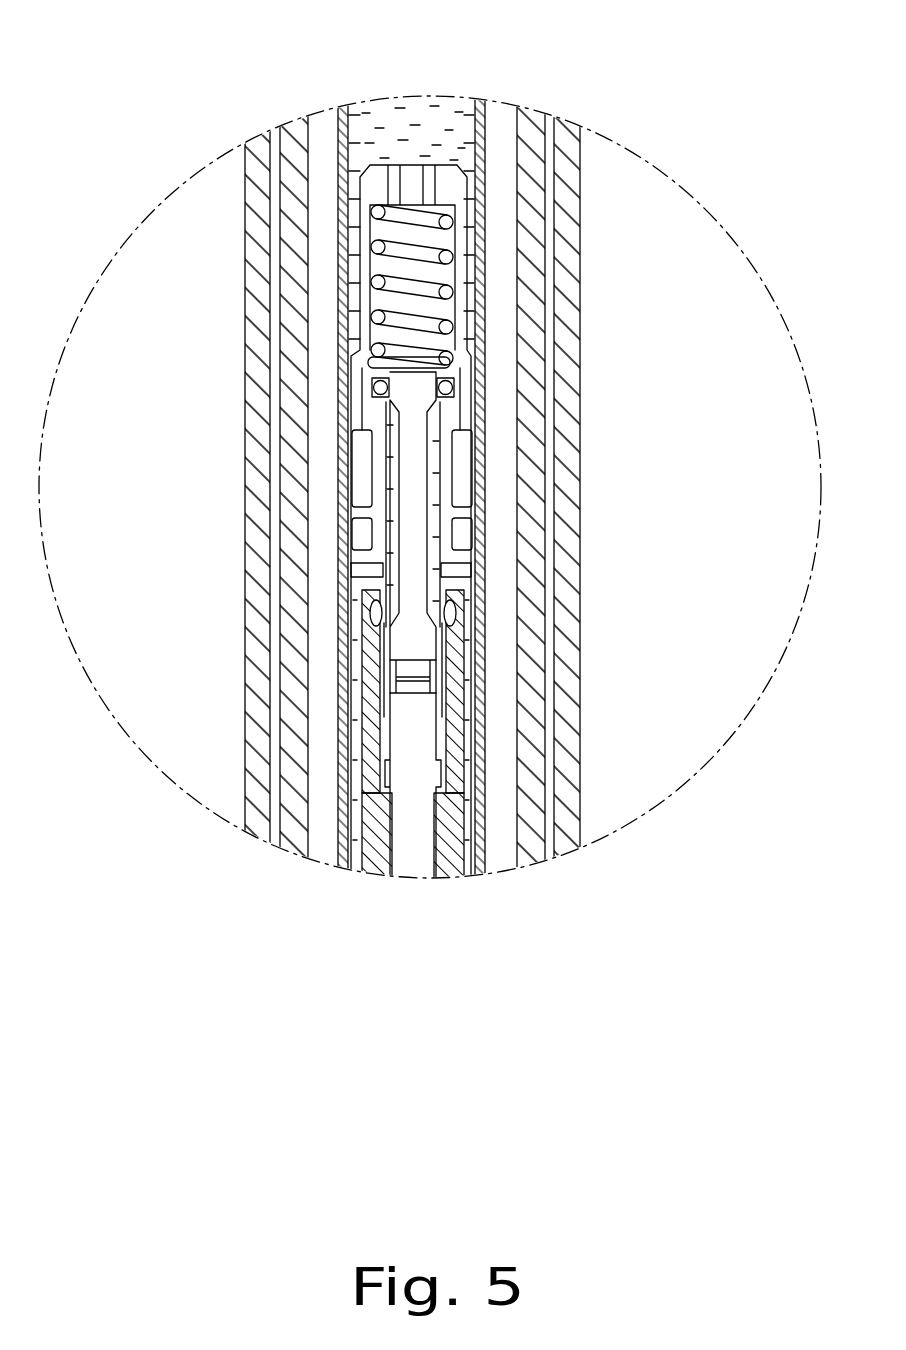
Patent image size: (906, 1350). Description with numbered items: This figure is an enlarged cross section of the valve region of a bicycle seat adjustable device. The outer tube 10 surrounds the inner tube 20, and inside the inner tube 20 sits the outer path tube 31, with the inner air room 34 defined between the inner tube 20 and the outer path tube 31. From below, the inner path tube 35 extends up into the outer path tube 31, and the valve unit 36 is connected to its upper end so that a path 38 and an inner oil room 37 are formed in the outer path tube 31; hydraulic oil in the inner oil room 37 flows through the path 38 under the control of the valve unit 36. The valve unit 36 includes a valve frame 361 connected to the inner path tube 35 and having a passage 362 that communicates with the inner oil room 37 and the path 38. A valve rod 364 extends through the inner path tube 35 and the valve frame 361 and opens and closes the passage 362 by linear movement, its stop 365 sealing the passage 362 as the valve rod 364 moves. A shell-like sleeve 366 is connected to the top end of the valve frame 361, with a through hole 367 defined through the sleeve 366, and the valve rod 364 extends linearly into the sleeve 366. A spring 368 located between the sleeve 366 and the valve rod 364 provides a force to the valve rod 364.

The outer tube 10 is at (248, 172).
The inner tube 20 is at (300, 126).
The outer path tube 31 is at (478, 877).
The inner air room 34 is at (331, 122).
The inner path tube 35 is at (453, 874).
The valve unit 36 is at (678, 588).
The inner oil room 37 is at (378, 118).
The path 38 is at (477, 812).
The valve frame 361 is at (446, 533).
The passage 362 is at (459, 574).
The valve rod 364 is at (413, 477).
The stop 365 is at (453, 380).
The sleeve 366 is at (457, 195).
The through hole 367 is at (460, 360).
The spring 368 is at (433, 259).